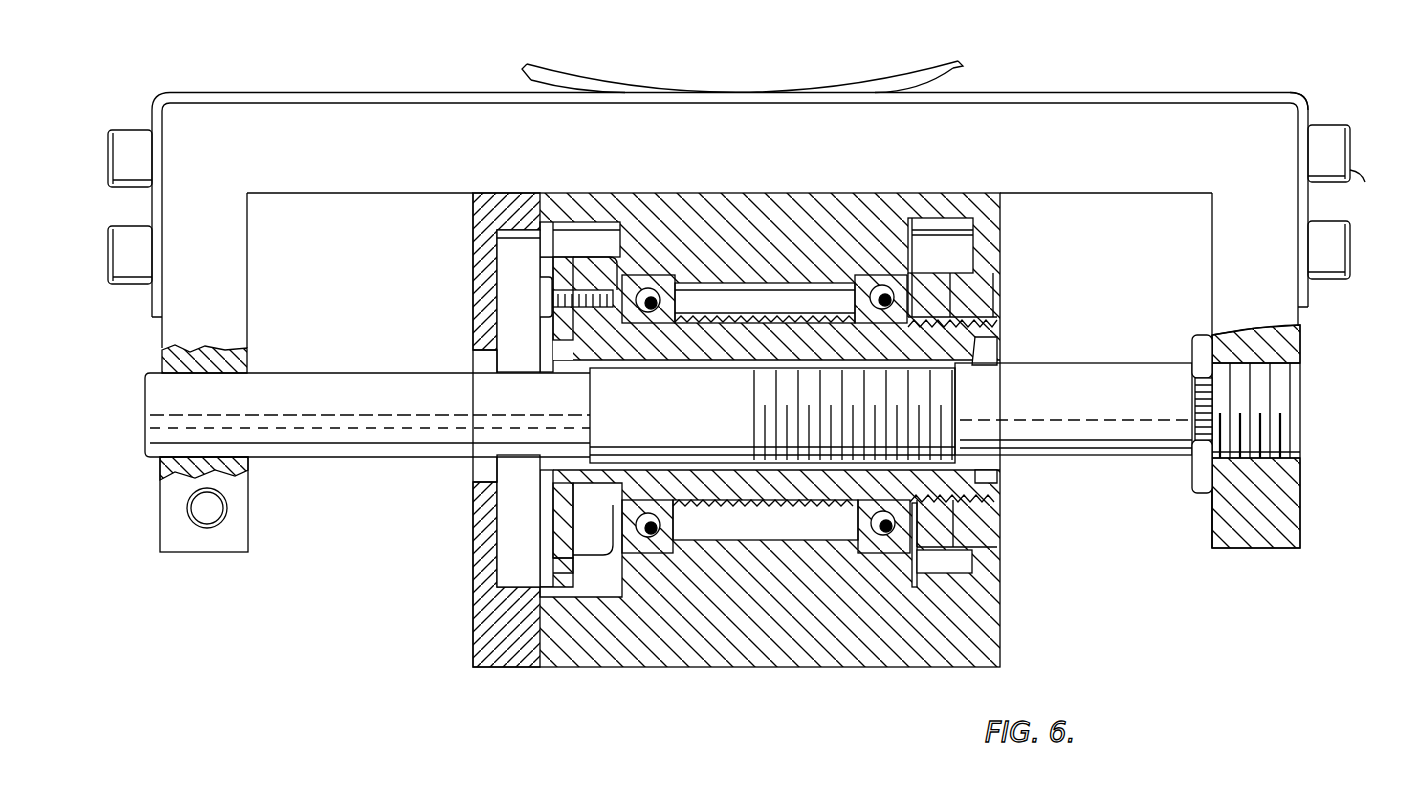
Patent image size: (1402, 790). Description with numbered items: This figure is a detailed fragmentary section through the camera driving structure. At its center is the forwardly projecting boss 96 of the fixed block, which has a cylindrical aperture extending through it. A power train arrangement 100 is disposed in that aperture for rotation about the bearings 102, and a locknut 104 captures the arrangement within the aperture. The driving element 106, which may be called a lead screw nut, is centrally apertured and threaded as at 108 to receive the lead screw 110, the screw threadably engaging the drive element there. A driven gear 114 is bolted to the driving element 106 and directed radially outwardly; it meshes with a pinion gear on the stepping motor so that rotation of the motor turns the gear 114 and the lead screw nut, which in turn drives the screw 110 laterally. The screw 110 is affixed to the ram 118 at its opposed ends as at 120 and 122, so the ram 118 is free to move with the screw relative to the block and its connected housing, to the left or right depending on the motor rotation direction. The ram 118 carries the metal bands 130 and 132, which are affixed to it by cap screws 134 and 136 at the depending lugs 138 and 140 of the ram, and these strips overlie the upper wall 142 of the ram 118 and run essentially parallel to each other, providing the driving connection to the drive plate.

The forwardly projecting boss 96 is at (738, 215).
The power train arrangement 100 is at (540, 330).
The bearings 102 is at (868, 540).
The locknut 104 is at (930, 296).
The driving element 106 is at (545, 346).
The threaded aperture 108 is at (905, 380).
The lead screw 110 is at (368, 415).
The driven gear 114 is at (545, 275).
The ram 118 is at (395, 171).
The screw attachment point 120 is at (175, 470).
The screw attachment point 122 is at (1192, 470).
The metal band 130 is at (160, 98).
The metal band 132 is at (1300, 96).
The cap screw 134 is at (108, 258).
The cap screw 136 is at (1350, 232).
The depending lug 138 is at (212, 283).
The depending lug 140 is at (1240, 370).
The upper wall 142 is at (742, 103).